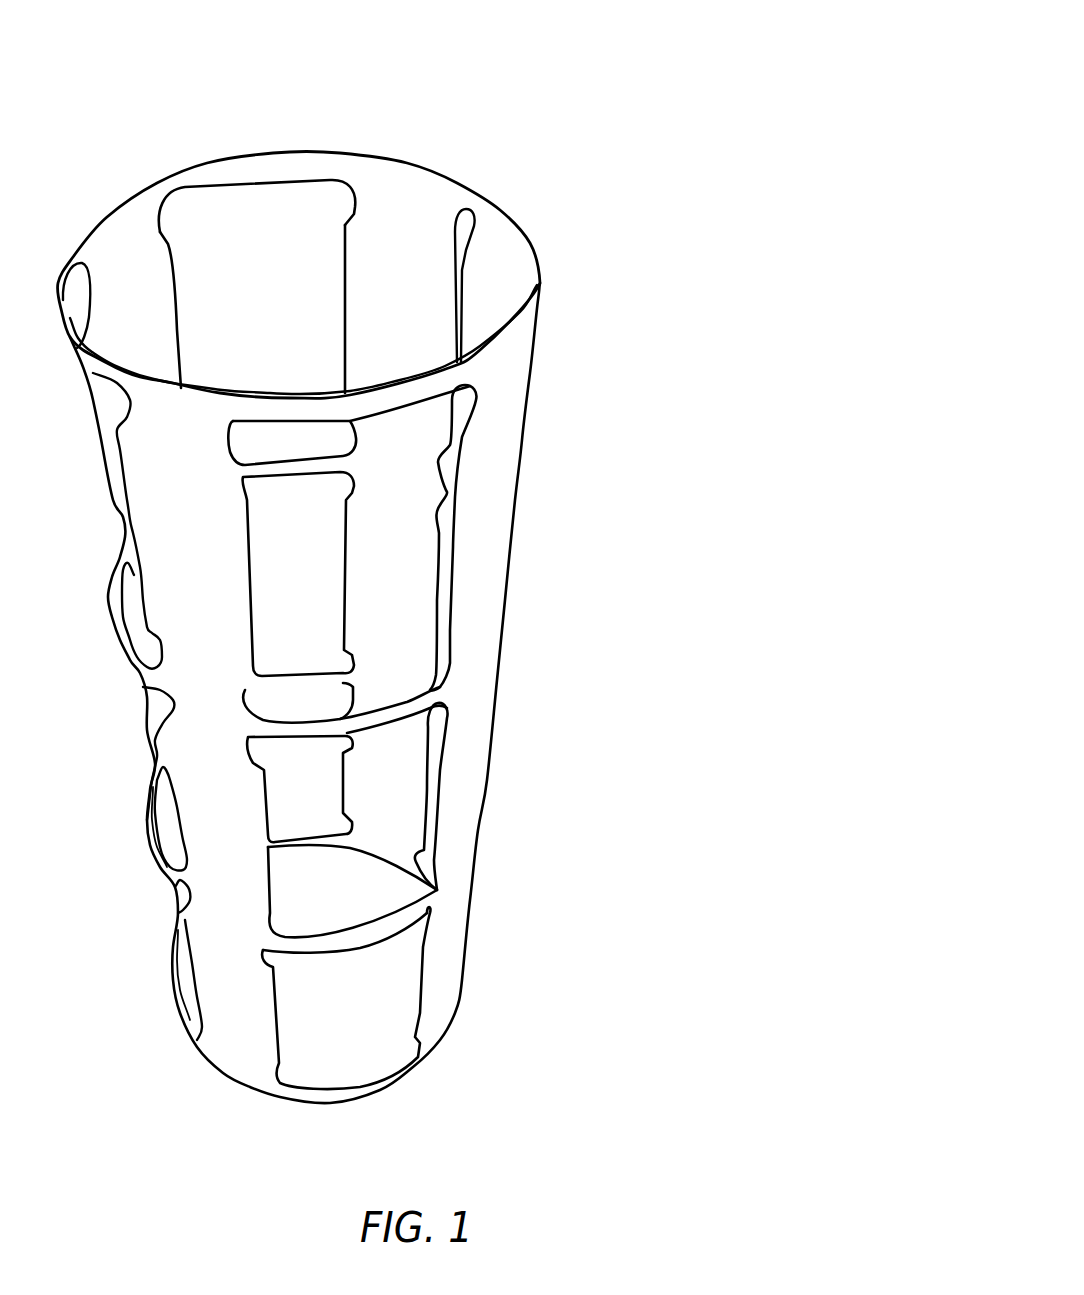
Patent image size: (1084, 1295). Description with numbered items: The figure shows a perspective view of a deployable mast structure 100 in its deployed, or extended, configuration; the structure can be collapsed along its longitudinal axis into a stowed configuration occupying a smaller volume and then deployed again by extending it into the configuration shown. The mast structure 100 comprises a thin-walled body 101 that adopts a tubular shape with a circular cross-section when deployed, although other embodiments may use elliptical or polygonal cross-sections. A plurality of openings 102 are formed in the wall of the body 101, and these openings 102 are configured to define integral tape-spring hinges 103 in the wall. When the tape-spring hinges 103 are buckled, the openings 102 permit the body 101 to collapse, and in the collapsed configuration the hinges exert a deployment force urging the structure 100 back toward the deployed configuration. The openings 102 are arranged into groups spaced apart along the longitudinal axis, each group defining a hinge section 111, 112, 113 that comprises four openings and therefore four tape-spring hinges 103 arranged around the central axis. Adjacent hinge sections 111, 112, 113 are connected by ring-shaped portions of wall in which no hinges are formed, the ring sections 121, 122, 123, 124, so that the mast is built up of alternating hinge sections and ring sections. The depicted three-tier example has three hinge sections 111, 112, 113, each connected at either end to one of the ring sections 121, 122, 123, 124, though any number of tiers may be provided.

The deployable mast structure 100 is at (611, 129).
The thin-walled body 101 is at (402, 160).
The openings 102 is at (224, 229).
The tape-spring hinge 103 is at (342, 343).
The hinge section 111 is at (623, 282).
The hinge section 112 is at (623, 603).
The hinge section 113 is at (623, 837).
The ring section 121 is at (547, 257).
The ring section 122 is at (508, 595).
The ring section 123 is at (478, 828).
The ring section 124 is at (470, 973).